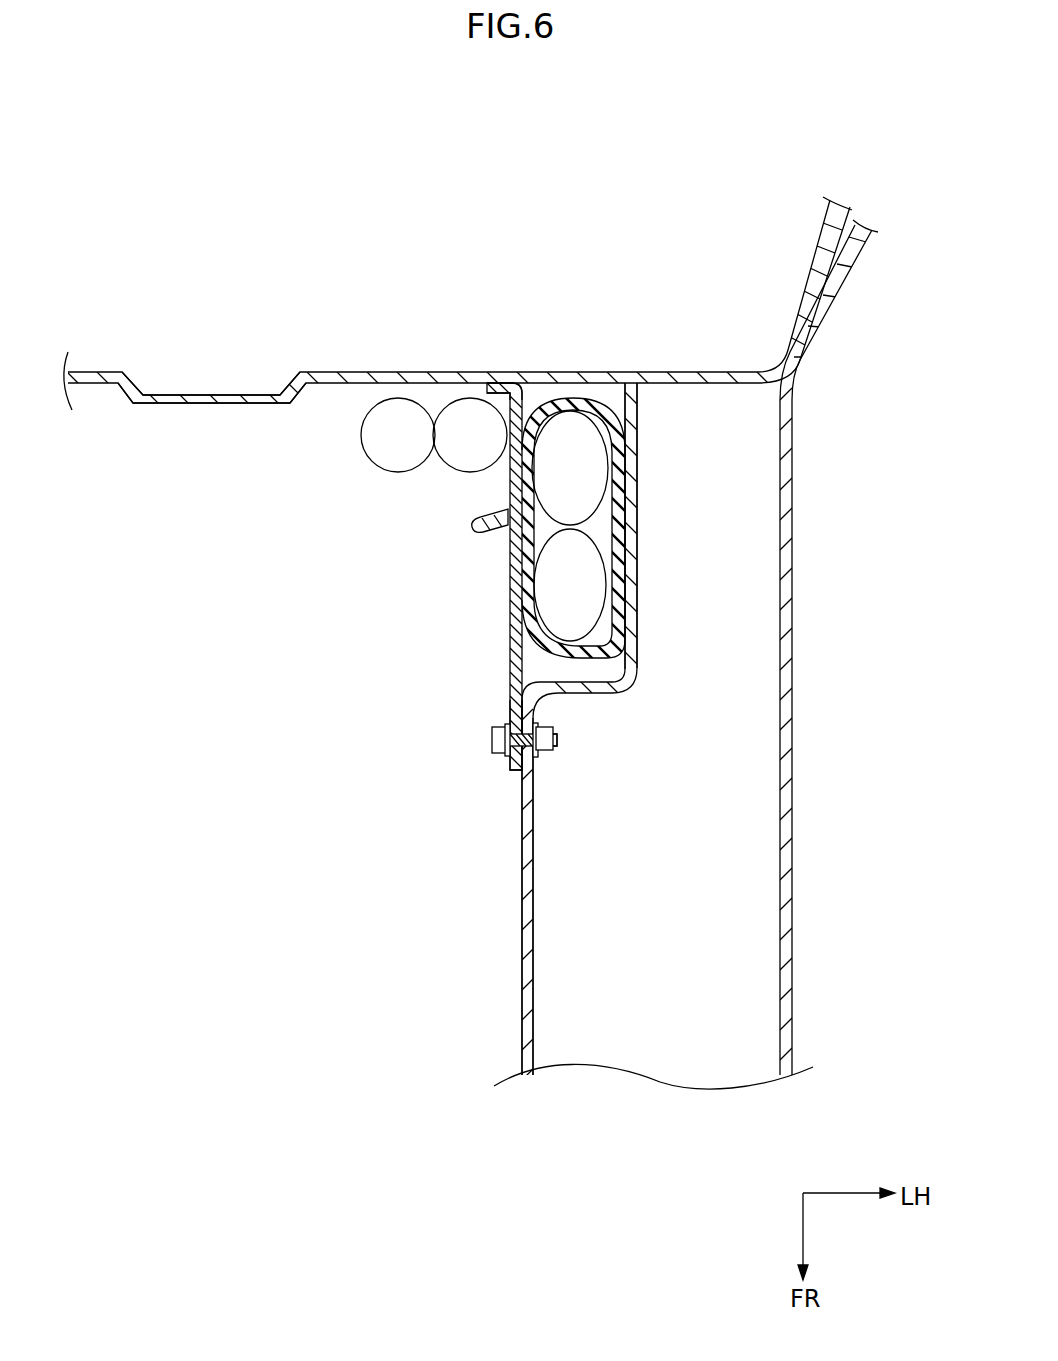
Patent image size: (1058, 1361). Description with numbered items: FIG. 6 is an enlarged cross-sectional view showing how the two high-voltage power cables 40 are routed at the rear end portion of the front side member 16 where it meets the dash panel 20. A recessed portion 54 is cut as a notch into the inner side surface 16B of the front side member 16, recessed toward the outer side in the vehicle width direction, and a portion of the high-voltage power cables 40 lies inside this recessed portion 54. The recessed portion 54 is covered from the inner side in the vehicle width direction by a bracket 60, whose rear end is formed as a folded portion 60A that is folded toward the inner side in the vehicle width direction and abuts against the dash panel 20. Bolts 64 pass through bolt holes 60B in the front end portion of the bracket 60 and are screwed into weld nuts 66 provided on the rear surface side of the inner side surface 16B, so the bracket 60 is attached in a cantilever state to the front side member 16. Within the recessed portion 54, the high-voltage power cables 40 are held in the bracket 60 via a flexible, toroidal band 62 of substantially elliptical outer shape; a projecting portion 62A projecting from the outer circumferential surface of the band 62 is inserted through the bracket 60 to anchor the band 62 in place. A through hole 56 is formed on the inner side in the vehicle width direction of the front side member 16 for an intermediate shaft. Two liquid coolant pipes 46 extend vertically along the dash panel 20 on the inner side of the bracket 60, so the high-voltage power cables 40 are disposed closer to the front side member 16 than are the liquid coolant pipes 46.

The front side member 16 is at (521, 972).
The inner side surface 16B is at (522, 903).
The dash panel 20 is at (95, 384).
The high-voltage power cables 40 is at (604, 530).
The liquid coolant pipes 46 is at (465, 413).
The recessed portion 54 is at (622, 398).
The through hole 56 is at (151, 372).
The bracket 60 is at (508, 644).
The folded portion 60A is at (503, 383).
The bolt holes 60B is at (503, 727).
The band 62 is at (607, 650).
The projecting portion 62A is at (478, 532).
The bolt 64 is at (492, 740).
The weld nuts 66 is at (542, 752).